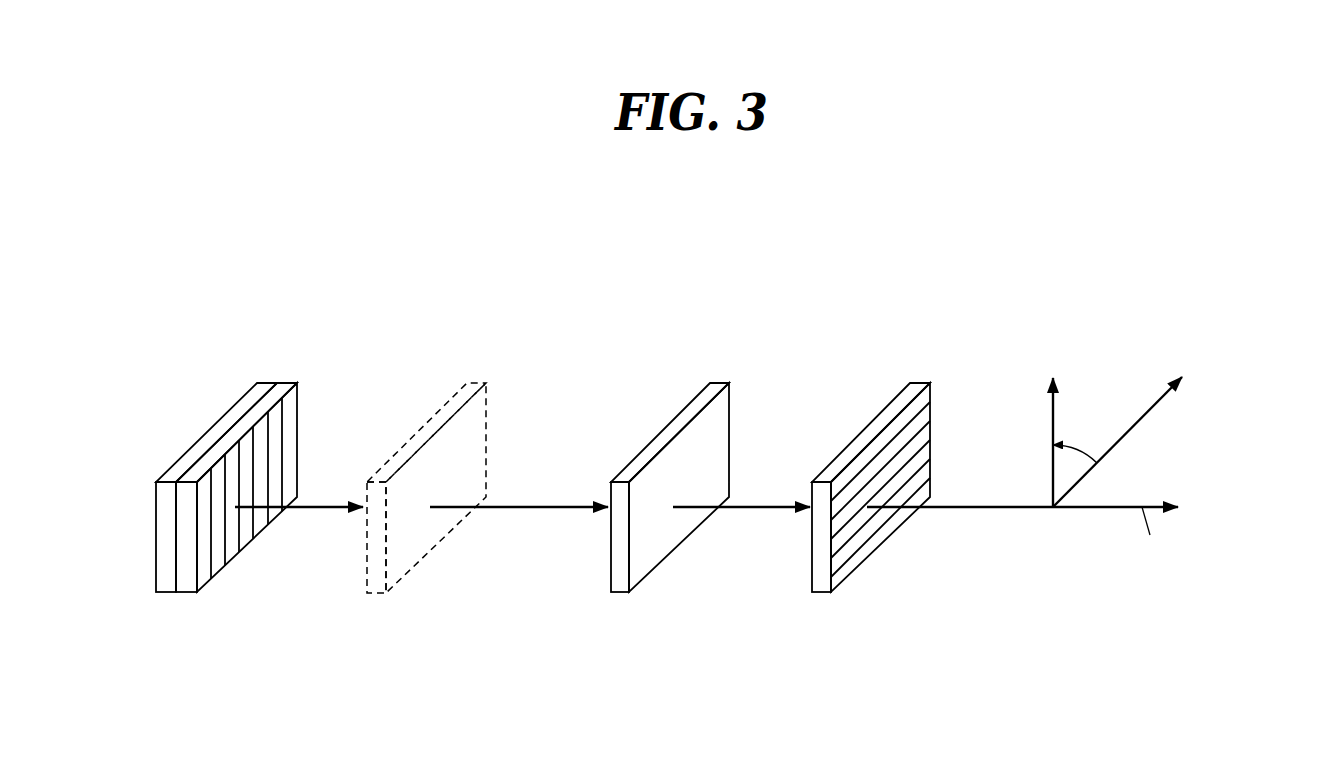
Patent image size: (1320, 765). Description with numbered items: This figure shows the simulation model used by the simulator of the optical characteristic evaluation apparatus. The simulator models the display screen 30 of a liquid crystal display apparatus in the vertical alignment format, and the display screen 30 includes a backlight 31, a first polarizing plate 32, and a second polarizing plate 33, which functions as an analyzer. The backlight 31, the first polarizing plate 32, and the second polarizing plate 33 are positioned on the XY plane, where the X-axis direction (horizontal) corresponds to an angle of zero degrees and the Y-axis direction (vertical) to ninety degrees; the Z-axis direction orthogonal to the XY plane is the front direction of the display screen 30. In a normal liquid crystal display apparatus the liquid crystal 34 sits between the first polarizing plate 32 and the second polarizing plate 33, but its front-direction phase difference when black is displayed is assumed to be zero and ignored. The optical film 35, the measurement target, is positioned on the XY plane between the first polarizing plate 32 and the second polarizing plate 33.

The display screen 30 is at (915, 307).
The backlight 31 is at (169, 594).
The first polarizing plate 32 is at (191, 594).
The second polarizing plate 33 is at (820, 596).
The liquid crystal 34 is at (376, 597).
The optical film 35 is at (622, 596).